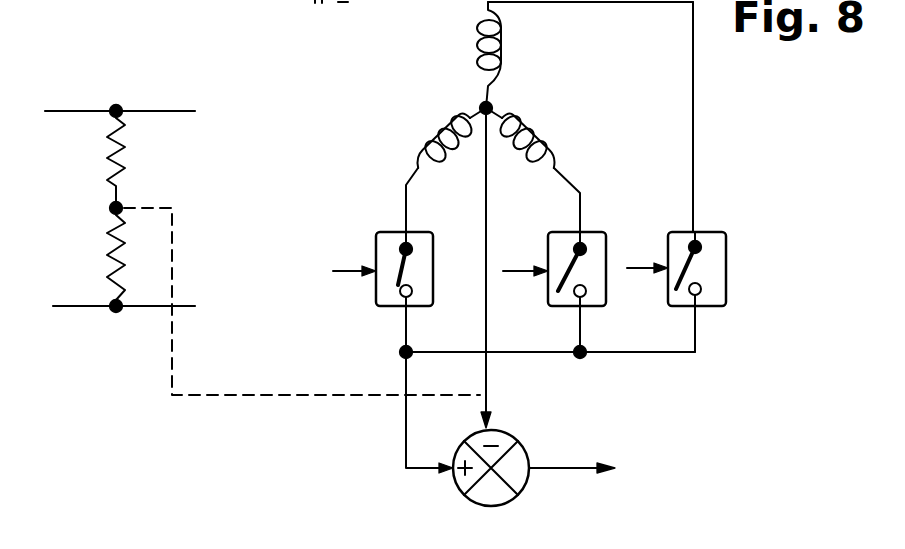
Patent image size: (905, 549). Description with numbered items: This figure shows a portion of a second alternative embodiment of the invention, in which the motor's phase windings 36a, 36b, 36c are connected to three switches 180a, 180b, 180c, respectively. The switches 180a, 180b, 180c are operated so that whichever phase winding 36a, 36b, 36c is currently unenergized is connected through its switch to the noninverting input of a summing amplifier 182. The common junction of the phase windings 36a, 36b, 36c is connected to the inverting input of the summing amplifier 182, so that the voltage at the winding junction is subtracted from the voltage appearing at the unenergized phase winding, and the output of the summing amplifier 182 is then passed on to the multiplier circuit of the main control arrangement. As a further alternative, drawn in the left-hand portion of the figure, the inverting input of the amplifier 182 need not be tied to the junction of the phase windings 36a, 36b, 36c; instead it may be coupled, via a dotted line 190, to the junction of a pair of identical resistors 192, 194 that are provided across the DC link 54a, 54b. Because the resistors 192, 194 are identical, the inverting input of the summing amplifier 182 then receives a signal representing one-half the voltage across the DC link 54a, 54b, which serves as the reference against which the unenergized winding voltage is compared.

The DC link 54a is at (100, 110).
The DC link 54b is at (100, 308).
The resistor 192 is at (125, 185).
The resistor 194 is at (110, 270).
The dotted line 190 is at (292, 393).
The phase winding 36a is at (497, 55).
The phase winding 36b is at (445, 130).
The phase winding 36c is at (557, 158).
The switch 180a is at (715, 232).
The switch 180b is at (383, 232).
The switch 180c is at (597, 232).
The summing amplifier 182 is at (527, 452).